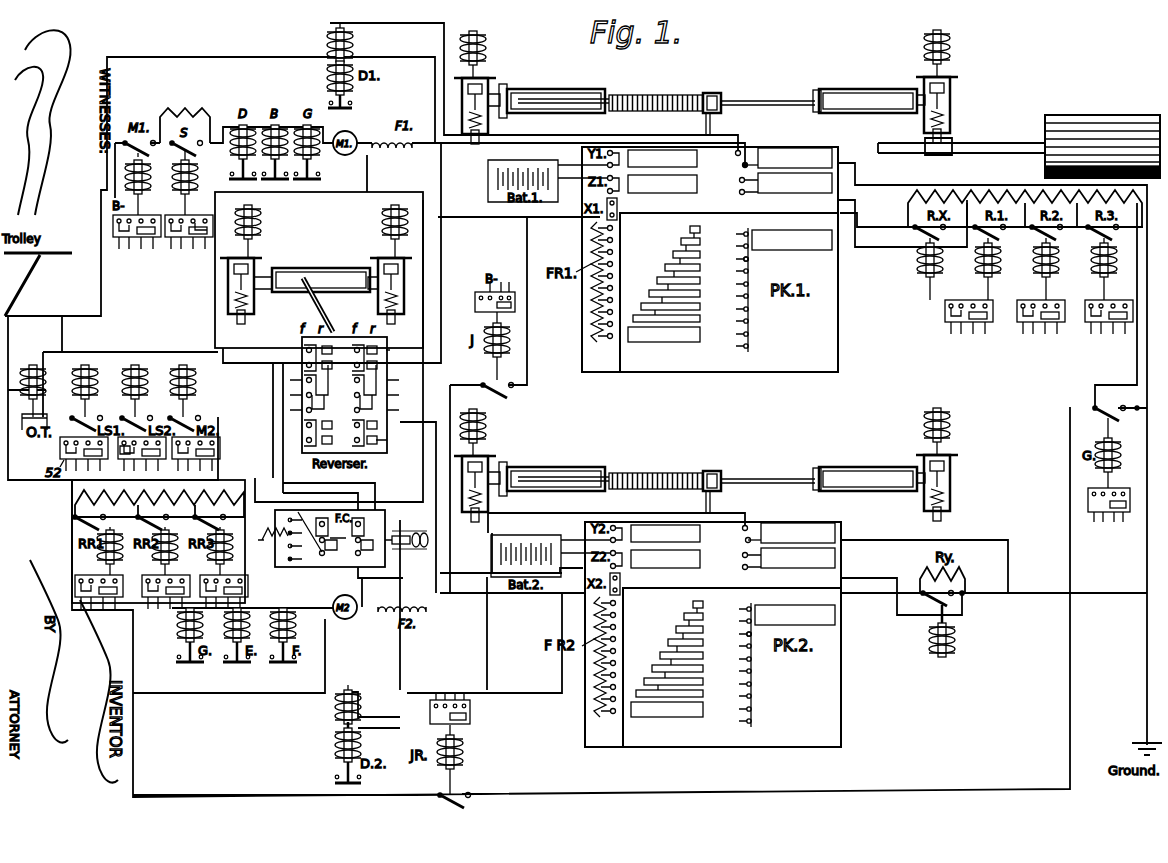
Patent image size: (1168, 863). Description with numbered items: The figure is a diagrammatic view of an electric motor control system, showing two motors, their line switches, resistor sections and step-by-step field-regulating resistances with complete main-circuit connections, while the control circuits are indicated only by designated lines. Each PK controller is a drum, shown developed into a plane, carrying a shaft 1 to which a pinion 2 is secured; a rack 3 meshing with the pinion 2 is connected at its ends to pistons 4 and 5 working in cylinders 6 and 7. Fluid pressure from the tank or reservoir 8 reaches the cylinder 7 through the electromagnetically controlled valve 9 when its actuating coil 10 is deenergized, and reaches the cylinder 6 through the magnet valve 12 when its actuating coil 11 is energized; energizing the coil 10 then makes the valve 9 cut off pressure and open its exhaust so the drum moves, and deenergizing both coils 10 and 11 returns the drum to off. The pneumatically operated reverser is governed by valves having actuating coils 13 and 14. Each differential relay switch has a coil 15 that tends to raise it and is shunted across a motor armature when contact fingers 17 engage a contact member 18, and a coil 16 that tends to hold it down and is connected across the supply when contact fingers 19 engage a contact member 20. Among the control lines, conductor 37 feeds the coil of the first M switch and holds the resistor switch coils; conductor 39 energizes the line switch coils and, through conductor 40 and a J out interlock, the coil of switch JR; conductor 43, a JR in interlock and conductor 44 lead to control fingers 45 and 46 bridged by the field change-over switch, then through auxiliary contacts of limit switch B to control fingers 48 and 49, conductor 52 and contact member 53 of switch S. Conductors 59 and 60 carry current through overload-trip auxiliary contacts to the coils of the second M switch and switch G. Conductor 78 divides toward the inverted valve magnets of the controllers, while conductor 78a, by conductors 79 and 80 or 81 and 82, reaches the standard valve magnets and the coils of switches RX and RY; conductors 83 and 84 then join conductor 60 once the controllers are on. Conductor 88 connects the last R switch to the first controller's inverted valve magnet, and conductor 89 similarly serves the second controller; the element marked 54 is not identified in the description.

The shaft 1 is at (711, 120).
The pinion 2 is at (714, 93).
The rack 3 is at (680, 95).
The piston 4 is at (507, 90).
The piston 5 is at (830, 90).
The cylinder 6 is at (575, 90).
The cylinder 7 is at (884, 90).
The tank or reservoir 8 is at (1102, 146).
The electromagnetically controlled valve 9 is at (950, 101).
The actuating coil 10 is at (952, 50).
The actuating coil 11 is at (487, 54).
The magnet valve 12 is at (488, 122).
The actuating coil 13 is at (260, 216).
The actuating coil 14 is at (384, 216).
The coil 15 is at (328, 78).
The coil 16 is at (328, 45).
The contact fingers 17 is at (738, 186).
The contact member 18 is at (796, 370).
The contact fingers 19 is at (745, 152).
The contact member 20 is at (796, 345).
The conductor 37 is at (135, 168).
The conductor 39 is at (1094, 514).
The conductor 40 is at (978, 280).
The conductor 43 is at (1114, 514).
The conductor 44 is at (1129, 525).
The control finger 45 is at (283, 563).
The control finger 46 is at (283, 550).
The control finger 48 is at (283, 537).
The control finger 49 is at (283, 524).
The conductor 52 is at (203, 237).
The contact member 53 is at (183, 239).
The contact 54 is at (245, 599).
The conductor 59 is at (496, 291).
The conductor 60 is at (437, 701).
The conductor 78 is at (742, 259).
The conductor 78a is at (996, 337).
The conductor 79 is at (1018, 335).
The conductor 80 is at (1071, 335).
The conductor 81 is at (138, 598).
The conductor 82 is at (178, 462).
The conductor 83 is at (742, 236).
The conductor 84 is at (742, 247).
The conductor 88 is at (88, 462).
The conductor 89 is at (152, 462).